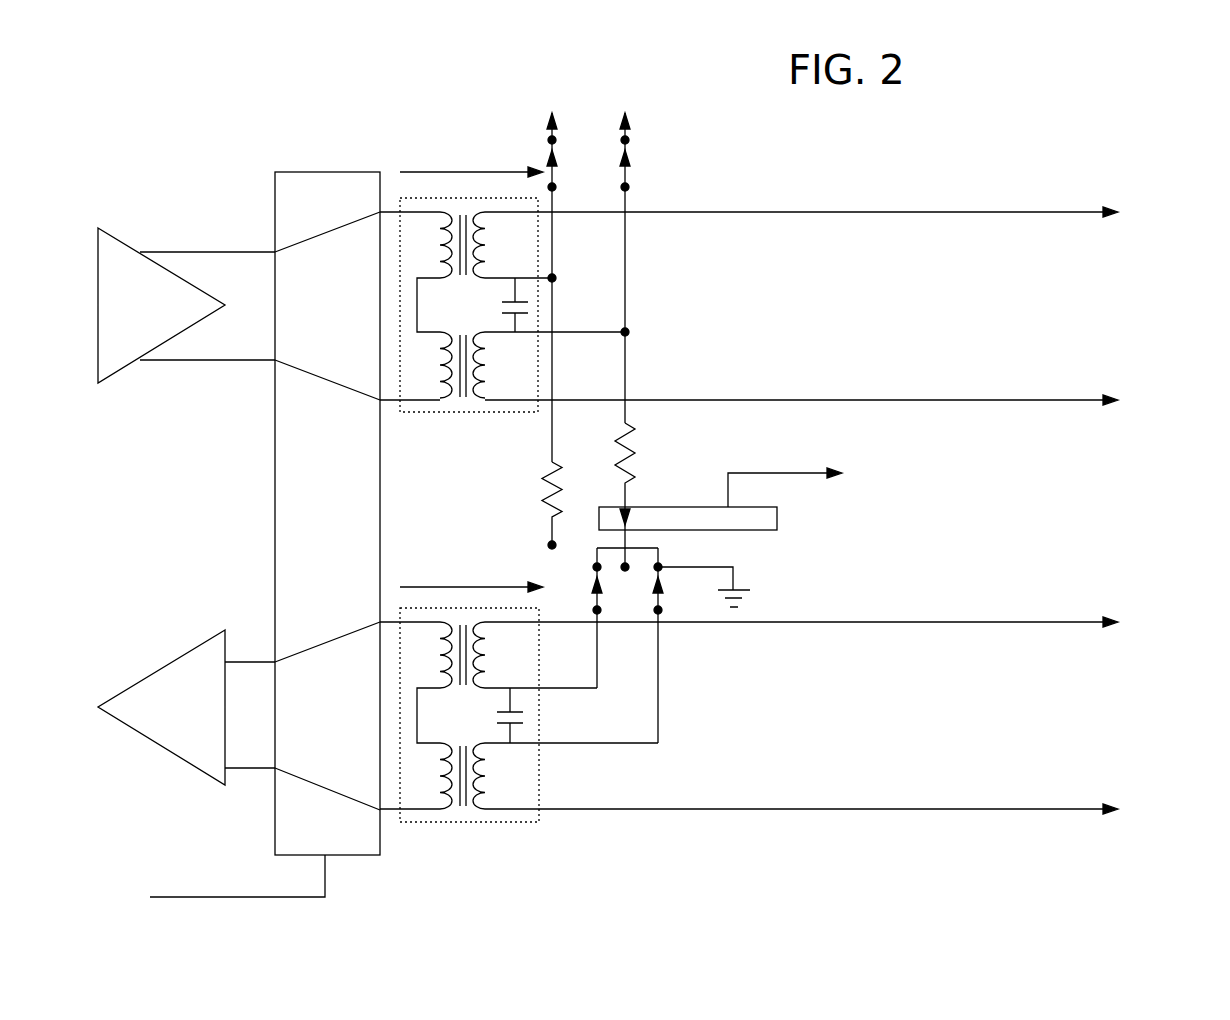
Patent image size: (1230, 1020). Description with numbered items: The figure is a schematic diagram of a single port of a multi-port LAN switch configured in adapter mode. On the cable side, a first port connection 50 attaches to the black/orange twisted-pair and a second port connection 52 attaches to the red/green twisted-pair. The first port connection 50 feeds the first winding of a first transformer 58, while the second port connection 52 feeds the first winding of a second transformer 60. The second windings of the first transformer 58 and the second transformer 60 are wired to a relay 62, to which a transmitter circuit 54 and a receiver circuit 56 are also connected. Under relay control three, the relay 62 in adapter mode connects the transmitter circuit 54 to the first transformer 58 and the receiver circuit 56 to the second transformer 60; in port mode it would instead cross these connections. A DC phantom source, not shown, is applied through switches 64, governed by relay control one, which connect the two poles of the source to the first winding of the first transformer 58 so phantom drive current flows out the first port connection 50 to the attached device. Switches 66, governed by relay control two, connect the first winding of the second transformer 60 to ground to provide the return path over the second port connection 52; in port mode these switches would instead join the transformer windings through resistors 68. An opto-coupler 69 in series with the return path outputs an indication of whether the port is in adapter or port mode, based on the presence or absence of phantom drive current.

The first port connection 50 is at (1058, 212).
The second port connection 52 is at (1056, 622).
The transmitter circuit 54 is at (120, 240).
The receiver circuit 56 is at (199, 647).
The first transformer 58 is at (440, 413).
The second transformer 60 is at (437, 823).
The relay 62 is at (335, 172).
The switches 64 is at (556, 188).
The switches 66 is at (598, 597).
The resistors 68 is at (543, 516).
The opto-coupler 69 is at (778, 518).